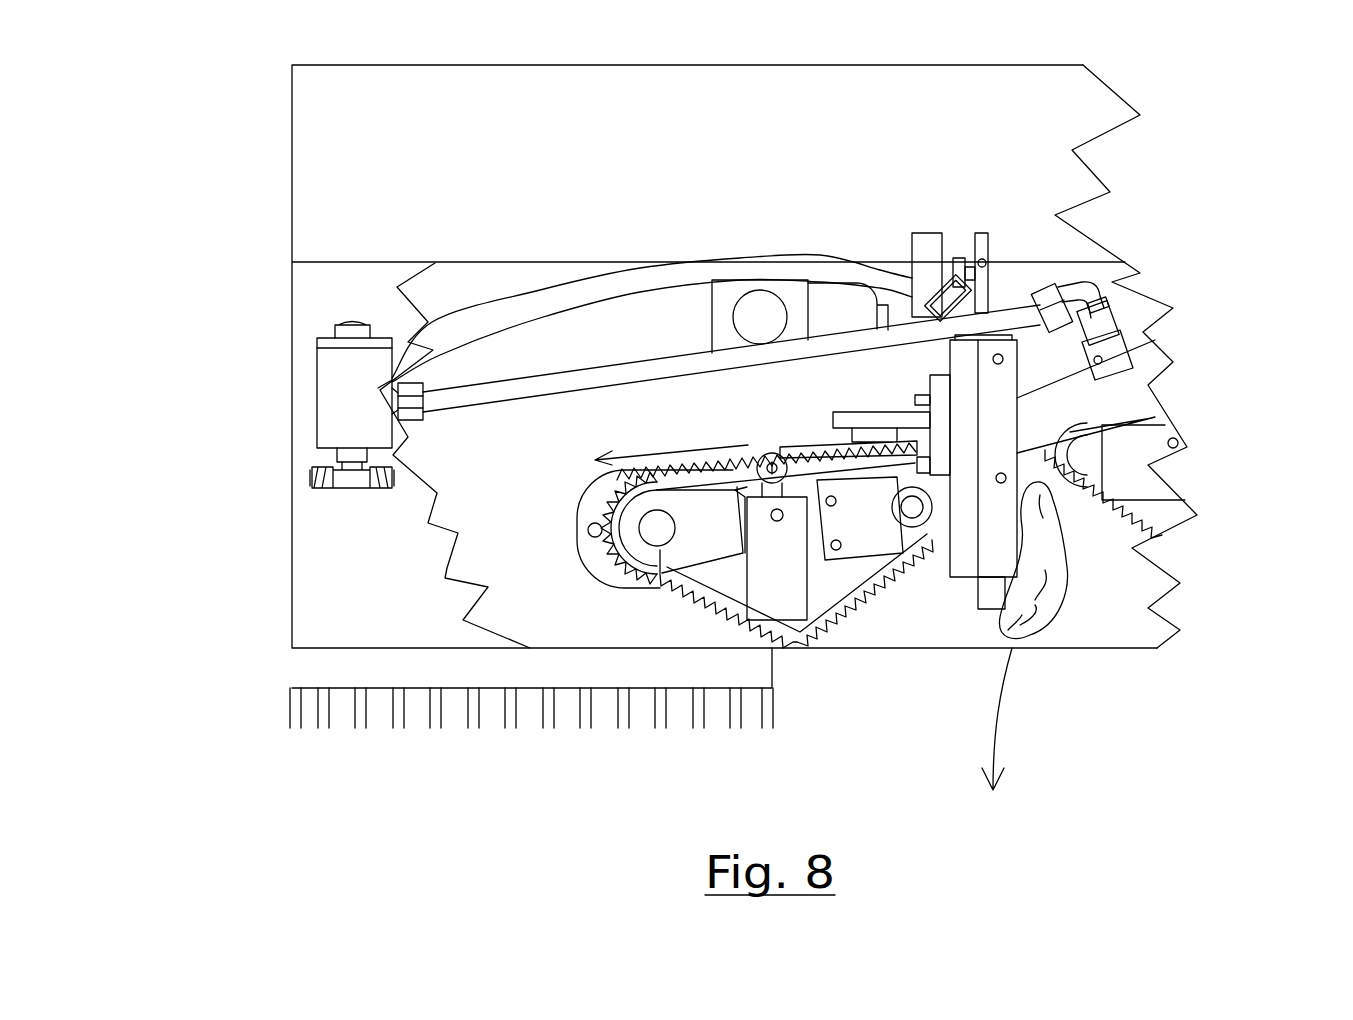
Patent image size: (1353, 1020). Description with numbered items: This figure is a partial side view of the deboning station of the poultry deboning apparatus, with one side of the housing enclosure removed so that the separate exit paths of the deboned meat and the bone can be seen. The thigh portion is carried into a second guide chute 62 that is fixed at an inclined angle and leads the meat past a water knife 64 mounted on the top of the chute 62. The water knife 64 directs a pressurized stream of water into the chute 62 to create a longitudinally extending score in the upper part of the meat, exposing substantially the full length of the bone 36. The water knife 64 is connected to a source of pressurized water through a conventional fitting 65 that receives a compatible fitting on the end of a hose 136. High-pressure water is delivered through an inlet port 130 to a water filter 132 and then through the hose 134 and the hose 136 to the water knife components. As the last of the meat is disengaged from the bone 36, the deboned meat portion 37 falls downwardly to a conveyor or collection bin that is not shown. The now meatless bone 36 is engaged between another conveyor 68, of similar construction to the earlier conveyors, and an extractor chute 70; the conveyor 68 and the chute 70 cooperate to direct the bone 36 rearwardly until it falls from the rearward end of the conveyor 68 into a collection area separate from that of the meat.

The bone 36 is at (790, 447).
The deboned meat portion 37 is at (1048, 618).
The second guide chute 62 is at (1130, 387).
The water knife 64 is at (1130, 343).
The fitting 65 is at (1100, 305).
The conveyor 68 is at (852, 613).
The extractor chute 70 is at (886, 411).
The inlet port 130 is at (312, 478).
The water filter 132 is at (328, 405).
The hose 134 is at (586, 283).
The hose 136 is at (543, 385).